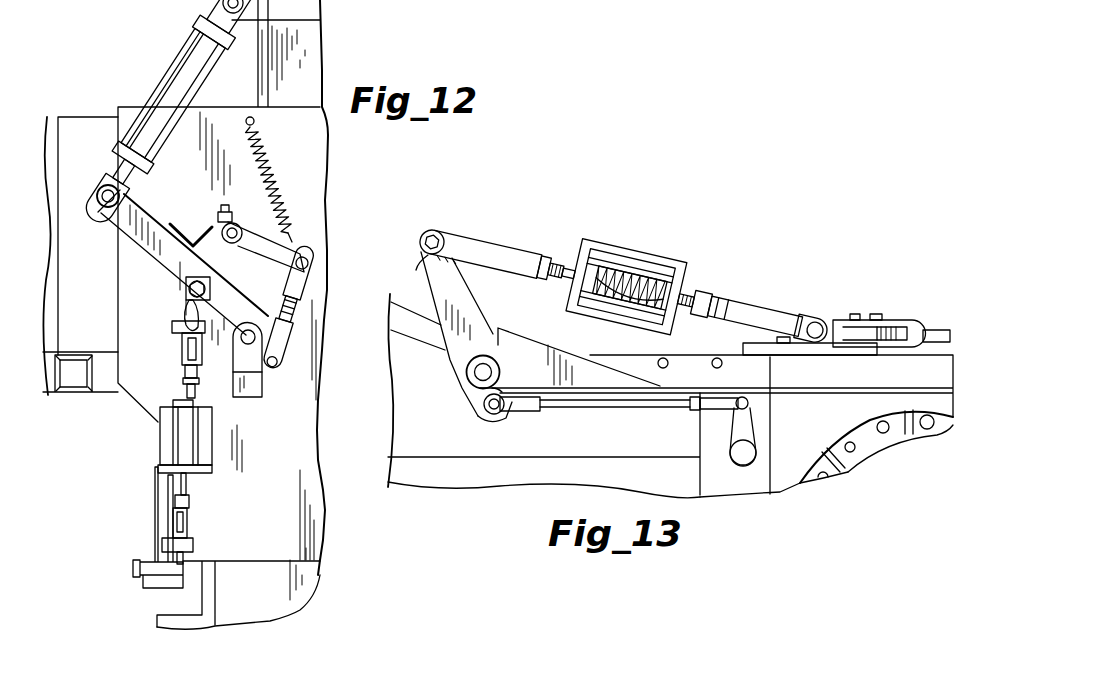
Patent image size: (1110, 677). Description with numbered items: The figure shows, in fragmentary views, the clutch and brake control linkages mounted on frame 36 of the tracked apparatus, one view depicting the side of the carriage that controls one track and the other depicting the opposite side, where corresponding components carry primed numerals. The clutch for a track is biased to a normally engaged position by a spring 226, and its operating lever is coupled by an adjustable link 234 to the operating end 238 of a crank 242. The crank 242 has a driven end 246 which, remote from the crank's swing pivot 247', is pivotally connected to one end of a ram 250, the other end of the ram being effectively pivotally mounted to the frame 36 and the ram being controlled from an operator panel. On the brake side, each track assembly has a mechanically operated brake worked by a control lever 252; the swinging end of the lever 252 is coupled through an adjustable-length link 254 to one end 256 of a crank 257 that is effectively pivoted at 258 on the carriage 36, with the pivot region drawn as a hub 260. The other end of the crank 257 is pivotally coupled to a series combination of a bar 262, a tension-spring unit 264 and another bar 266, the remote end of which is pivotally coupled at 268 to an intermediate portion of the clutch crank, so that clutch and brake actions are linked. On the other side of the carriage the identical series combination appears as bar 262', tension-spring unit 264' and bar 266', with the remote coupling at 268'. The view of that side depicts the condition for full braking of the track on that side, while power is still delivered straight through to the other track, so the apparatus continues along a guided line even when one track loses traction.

In FIG. 12, the frame 36 is at (80, 110).
In FIG. 12, the ram 250 is at (173, 82).
In FIG. 12, the driven end 246 is at (110, 208).
In FIG. 12, the crank 242 is at (142, 210).
In FIG. 12, the spring 226 is at (266, 152).
In FIG. 12, the swing pivot 247' is at (237, 265).
In FIG. 12, the pivotal coupling 268' is at (167, 295).
In FIG. 12, the adjustable link 234 is at (292, 318).
In FIG. 12, the bar 266' is at (168, 349).
In FIG. 12, the operating end 238 is at (268, 368).
In FIG. 12, the tension-spring unit 264' is at (152, 436).
In FIG. 12, the bar 262' is at (196, 527).
In FIG. 13, the bar 262 is at (502, 235).
In FIG. 13, the tension-spring unit 264 is at (631, 264).
In FIG. 13, the bar 266 is at (758, 292).
In FIG. 13, the pivotal coupling 268 is at (846, 312).
In FIG. 13, the crank 257 is at (466, 318).
In FIG. 13, the pivot 260 is at (480, 372).
In FIG. 13, the pivot 258 is at (468, 396).
In FIG. 13, the end of crank 256 is at (486, 420).
In FIG. 13, the adjustable-length link 254 is at (608, 410).
In FIG. 13, the control lever 252 is at (745, 435).